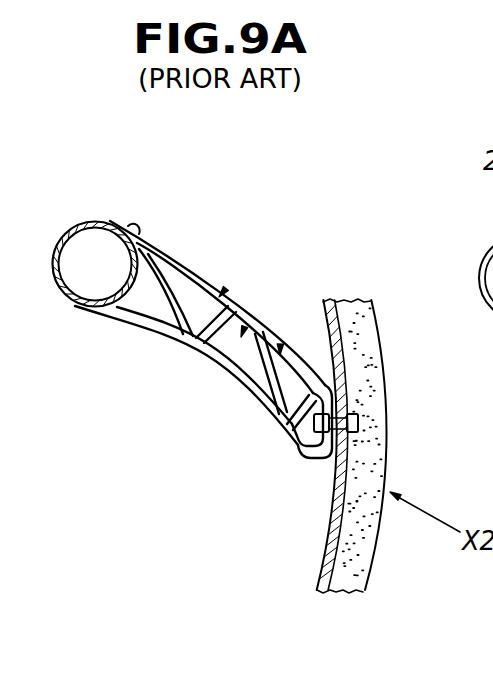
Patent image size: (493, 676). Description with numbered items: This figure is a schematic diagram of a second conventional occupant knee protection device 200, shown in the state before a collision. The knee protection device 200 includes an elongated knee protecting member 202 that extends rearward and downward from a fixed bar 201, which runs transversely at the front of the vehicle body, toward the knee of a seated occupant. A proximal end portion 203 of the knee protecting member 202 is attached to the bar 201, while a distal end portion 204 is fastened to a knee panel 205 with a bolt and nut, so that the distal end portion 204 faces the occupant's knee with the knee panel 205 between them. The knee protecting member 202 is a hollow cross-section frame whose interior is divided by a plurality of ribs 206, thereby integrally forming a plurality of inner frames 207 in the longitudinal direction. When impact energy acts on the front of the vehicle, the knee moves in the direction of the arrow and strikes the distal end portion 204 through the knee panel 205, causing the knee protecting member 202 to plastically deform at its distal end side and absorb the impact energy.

The knee protection device 200 is at (336, 176).
The fixed bar 201 is at (72, 222).
The knee protecting member 202 is at (206, 262).
The proximal end portion 203 is at (138, 232).
The distal end portion 204 is at (305, 447).
The knee panel 205 is at (384, 470).
The ribs 206 is at (212, 330).
The inner frames 207 is at (281, 347).